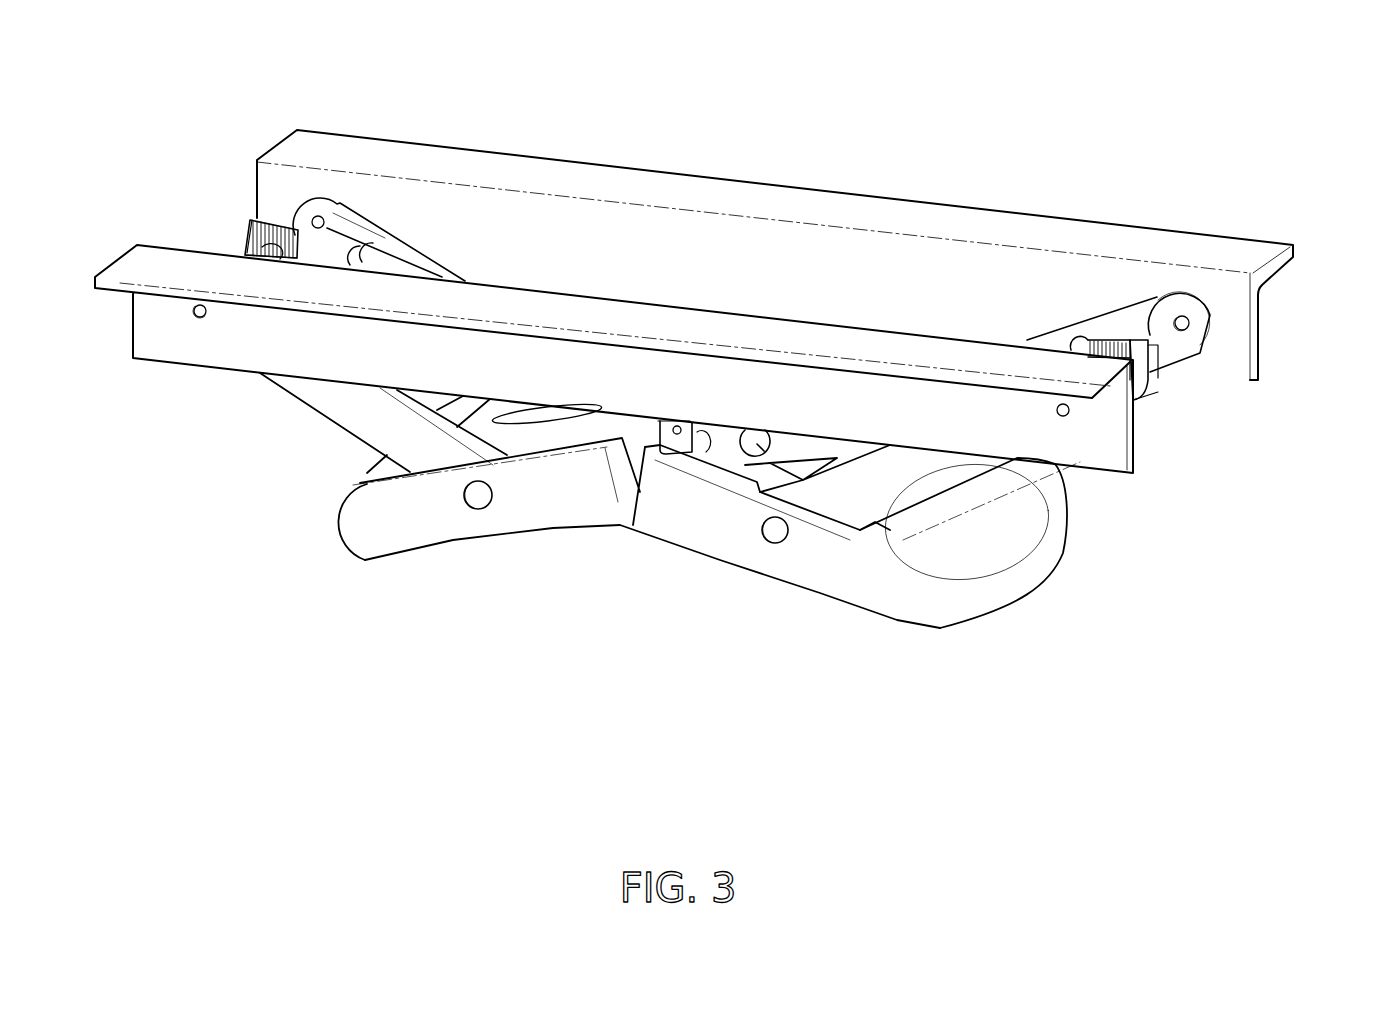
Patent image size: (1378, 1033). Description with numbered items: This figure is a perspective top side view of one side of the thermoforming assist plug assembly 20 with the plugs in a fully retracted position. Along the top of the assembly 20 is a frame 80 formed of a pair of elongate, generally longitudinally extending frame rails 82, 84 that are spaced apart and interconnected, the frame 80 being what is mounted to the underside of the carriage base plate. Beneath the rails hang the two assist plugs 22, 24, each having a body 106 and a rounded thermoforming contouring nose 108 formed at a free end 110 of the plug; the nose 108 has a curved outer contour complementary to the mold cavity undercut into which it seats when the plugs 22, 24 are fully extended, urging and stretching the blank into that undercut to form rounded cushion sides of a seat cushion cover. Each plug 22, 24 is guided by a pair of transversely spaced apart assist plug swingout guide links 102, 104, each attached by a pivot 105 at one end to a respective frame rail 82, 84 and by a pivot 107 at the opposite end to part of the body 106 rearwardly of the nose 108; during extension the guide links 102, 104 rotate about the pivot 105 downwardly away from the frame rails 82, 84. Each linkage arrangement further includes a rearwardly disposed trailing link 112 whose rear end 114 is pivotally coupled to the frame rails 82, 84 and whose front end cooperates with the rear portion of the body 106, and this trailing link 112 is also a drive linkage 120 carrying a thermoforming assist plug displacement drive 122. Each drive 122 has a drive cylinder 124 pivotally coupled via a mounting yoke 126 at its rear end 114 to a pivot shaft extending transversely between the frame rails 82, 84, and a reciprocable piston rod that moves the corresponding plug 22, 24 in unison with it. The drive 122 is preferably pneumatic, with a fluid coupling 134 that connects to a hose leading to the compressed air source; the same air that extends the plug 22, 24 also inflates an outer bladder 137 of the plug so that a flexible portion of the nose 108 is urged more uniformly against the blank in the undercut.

The thermoforming assist plug assembly 20 is at (302, 670).
The assist plug 22 is at (1067, 613).
The assist plug 24 is at (393, 583).
The frame 80 is at (1247, 206).
The frame rail 82 is at (140, 270).
The frame rail 84 is at (808, 213).
The assist plug swingout guide link 102 is at (325, 392).
The assist plug swingout guide link 104 is at (337, 213).
The pivot 105 is at (316, 216).
The body 106 is at (547, 490).
The pivot 107 is at (482, 498).
The rounded thermoforming contouring nose 108 is at (294, 534).
The free end 110 is at (340, 537).
The trailing link 112 is at (197, 202).
The rear end 114 is at (248, 240).
The drive linkage 120 is at (217, 234).
The thermoforming assist plug displacement drive 122 is at (464, 227).
The drive cylinder 124 is at (405, 255).
The mounting yoke 126 is at (262, 222).
The fluid coupling 134 is at (759, 432).
The bladder 137 is at (345, 557).